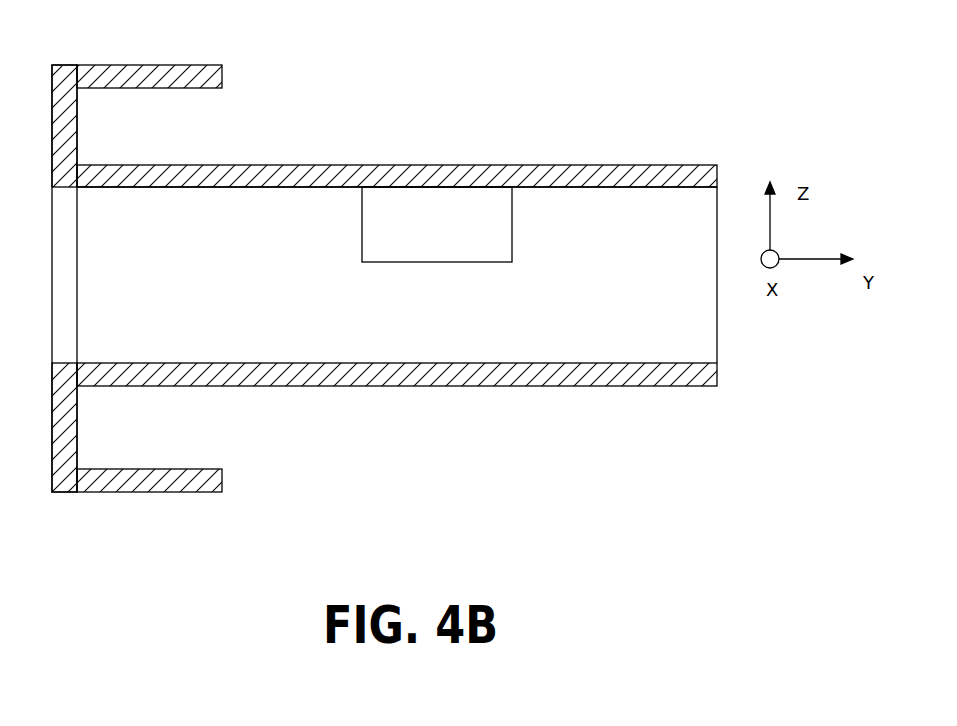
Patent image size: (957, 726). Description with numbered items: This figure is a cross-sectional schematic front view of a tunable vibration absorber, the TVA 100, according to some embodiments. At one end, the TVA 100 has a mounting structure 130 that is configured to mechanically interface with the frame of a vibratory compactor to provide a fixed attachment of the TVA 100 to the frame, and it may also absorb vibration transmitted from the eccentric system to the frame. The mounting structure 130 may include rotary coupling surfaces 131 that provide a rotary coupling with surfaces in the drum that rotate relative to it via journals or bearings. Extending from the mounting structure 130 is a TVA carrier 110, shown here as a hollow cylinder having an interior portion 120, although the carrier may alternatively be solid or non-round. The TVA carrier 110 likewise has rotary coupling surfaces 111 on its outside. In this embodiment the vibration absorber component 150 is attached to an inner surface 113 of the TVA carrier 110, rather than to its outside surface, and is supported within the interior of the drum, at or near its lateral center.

The TVA 100 is at (466, 272).
The TVA carrier 110 is at (466, 295).
The rotary coupling surfaces 111 is at (708, 165).
The inner surface 113 is at (183, 187).
The interior portion 120 is at (645, 340).
The mounting structure 130 is at (179, 331).
The rotary coupling surfaces 131 is at (150, 165).
The vibration absorber component 150 is at (497, 238).